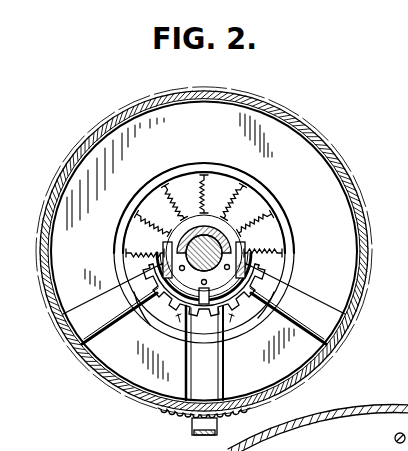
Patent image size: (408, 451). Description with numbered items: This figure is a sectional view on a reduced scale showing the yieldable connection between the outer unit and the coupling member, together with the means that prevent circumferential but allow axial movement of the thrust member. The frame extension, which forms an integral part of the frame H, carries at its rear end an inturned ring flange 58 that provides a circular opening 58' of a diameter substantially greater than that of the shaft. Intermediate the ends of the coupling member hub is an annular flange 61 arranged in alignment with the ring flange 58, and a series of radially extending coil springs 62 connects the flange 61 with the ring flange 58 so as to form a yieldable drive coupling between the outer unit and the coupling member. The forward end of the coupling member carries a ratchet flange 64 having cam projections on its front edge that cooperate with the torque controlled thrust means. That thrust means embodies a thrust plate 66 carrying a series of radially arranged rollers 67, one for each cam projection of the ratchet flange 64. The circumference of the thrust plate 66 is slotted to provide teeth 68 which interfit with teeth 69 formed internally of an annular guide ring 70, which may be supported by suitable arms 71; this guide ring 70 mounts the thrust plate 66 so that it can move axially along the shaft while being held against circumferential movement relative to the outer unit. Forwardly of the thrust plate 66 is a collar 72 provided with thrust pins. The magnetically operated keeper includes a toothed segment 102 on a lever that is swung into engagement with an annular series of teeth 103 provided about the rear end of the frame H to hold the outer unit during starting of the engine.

The frame H is at (299, 131).
The ring flange 58 is at (217, 251).
The circular opening 58' is at (211, 253).
The annular flange 61 is at (219, 222).
The coil springs 62 is at (234, 184).
The ratchet flange 64 is at (245, 247).
The thrust plate 66 is at (158, 323).
The rollers 67 is at (147, 289).
The teeth 68 is at (265, 277).
The teeth 69 is at (270, 292).
The guide ring 70 is at (201, 322).
The arms 71 is at (87, 325).
The collar 72 is at (204, 253).
The toothed segment 102 is at (198, 433).
The teeth 103 is at (182, 421).